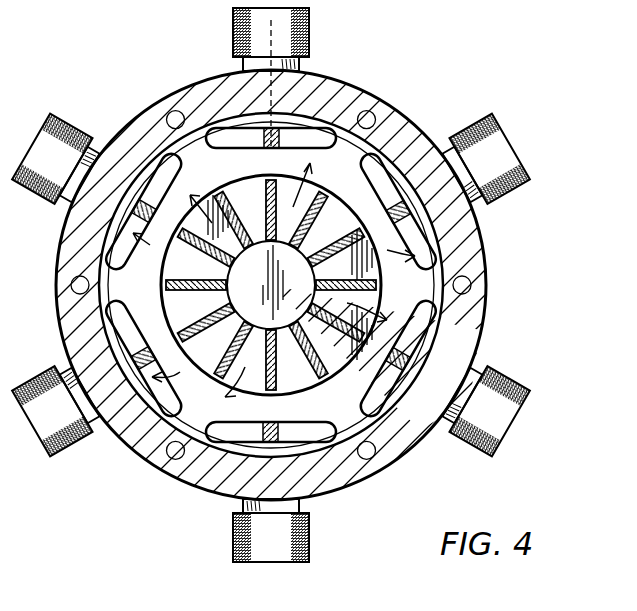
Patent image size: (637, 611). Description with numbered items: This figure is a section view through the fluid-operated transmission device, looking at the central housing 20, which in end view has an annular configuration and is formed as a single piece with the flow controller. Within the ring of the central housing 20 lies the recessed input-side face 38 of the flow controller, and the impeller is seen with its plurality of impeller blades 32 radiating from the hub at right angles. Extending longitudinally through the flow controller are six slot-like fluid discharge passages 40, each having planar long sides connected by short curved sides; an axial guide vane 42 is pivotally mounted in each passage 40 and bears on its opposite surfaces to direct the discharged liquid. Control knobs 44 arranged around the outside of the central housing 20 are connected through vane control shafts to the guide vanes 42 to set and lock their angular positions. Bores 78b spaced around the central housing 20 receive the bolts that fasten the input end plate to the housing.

The central housing 20 is at (472, 322).
The impeller blades 32 is at (186, 288).
The input-side face 38 is at (472, 340).
The fluid discharge passages 40 is at (124, 336).
The axial guide vanes 42 is at (150, 205).
The control knobs 44 is at (70, 122).
The bores 78b is at (373, 111).